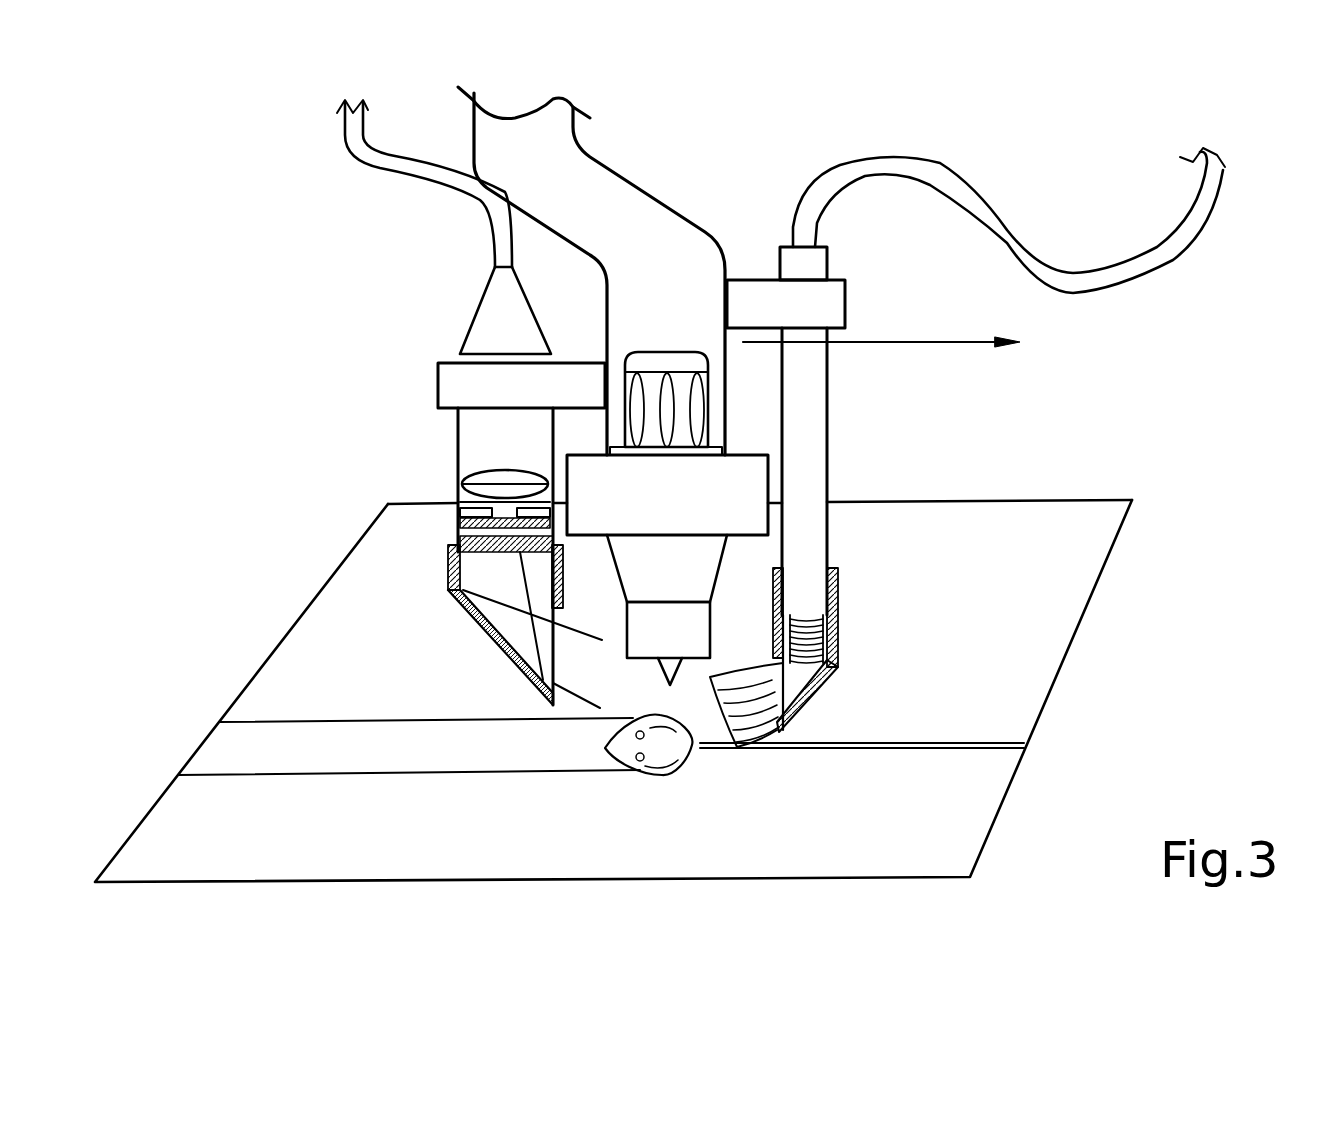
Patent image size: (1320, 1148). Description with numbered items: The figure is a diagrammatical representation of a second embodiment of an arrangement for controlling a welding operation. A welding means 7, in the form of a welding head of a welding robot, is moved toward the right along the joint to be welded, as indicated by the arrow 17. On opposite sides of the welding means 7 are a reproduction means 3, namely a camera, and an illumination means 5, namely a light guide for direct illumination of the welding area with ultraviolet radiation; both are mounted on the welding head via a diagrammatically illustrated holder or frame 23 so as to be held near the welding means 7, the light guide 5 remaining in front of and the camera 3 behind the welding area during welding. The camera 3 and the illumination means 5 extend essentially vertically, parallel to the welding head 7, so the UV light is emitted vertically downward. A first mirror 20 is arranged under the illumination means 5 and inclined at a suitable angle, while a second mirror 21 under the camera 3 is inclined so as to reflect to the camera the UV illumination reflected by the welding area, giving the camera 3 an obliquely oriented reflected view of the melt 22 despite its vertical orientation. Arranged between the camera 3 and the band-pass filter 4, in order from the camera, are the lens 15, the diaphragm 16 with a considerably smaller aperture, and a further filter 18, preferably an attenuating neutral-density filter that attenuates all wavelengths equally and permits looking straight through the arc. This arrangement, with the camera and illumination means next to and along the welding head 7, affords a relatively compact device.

The welding means 7 is at (622, 200).
The holder 23 is at (456, 380).
The reproduction means 3 is at (474, 441).
The lens 15 is at (492, 485).
The diaphragm 16 is at (466, 510).
The further filter 18 is at (468, 527).
The band-pass filter 4 is at (450, 553).
The second mirror 21 is at (485, 632).
The illumination means 5 is at (820, 437).
The first mirror 20 is at (800, 662).
The melt 22 is at (700, 777).
The arrow 17 is at (947, 347).